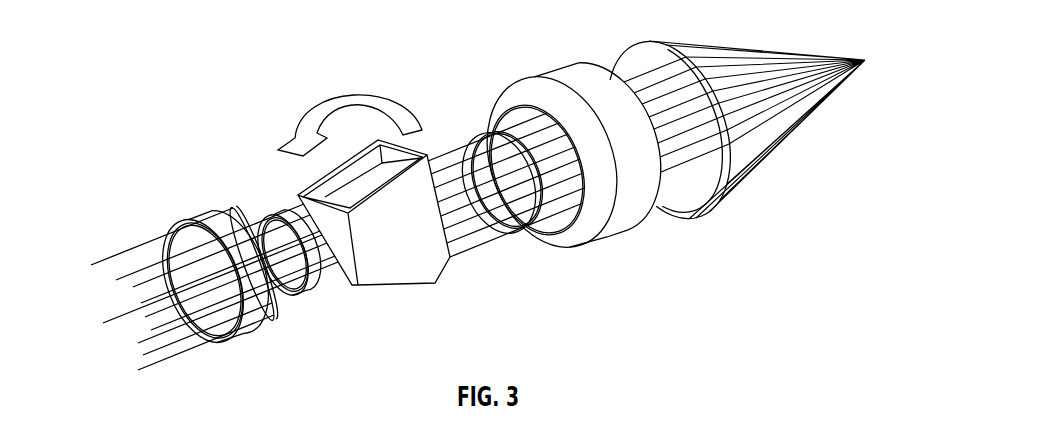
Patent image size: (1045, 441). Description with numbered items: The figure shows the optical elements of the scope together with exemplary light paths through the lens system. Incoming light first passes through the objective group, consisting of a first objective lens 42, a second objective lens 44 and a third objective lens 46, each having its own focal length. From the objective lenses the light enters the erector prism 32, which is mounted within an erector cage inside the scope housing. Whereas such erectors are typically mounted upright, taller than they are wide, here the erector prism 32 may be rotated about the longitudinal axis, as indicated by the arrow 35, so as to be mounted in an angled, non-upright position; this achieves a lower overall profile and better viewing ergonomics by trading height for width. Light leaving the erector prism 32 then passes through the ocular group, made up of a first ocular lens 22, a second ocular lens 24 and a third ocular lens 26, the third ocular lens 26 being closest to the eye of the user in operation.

The first ocular lens 22 is at (512, 230).
The second ocular lens 24 is at (607, 240).
The third ocular lens 26 is at (700, 218).
The erector prism 32 is at (397, 288).
The arrow 35 is at (358, 94).
The first objective lens 42 is at (225, 344).
The second objective lens 44 is at (272, 318).
The third objective lens 46 is at (310, 296).